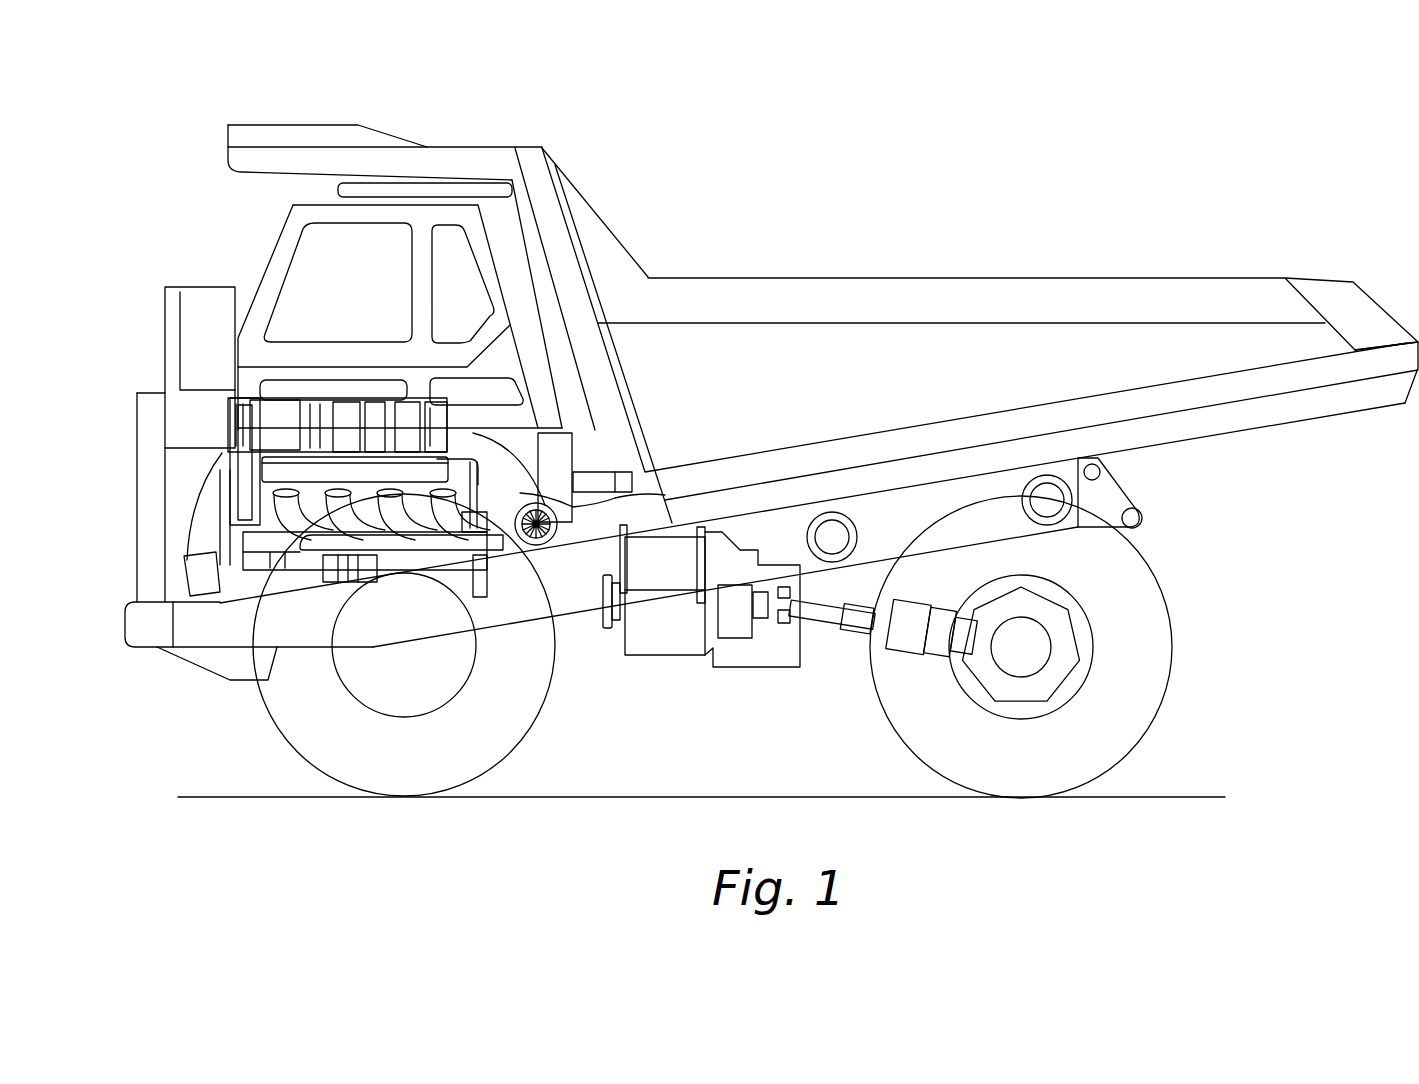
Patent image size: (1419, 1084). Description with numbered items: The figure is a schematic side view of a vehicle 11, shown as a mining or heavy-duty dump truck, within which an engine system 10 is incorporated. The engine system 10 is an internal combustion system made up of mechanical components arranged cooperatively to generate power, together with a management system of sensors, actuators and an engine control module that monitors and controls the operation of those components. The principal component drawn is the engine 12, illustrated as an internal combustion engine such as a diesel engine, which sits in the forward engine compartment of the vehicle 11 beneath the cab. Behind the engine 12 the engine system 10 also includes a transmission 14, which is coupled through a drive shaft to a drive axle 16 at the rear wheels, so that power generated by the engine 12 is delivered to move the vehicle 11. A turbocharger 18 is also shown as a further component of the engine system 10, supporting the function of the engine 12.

The engine system 10 is at (582, 462).
The vehicle 11 is at (807, 157).
The engine 12 is at (308, 395).
The transmission 14 is at (663, 615).
The drive axle 16 is at (848, 620).
The turbocharger 18 is at (663, 495).